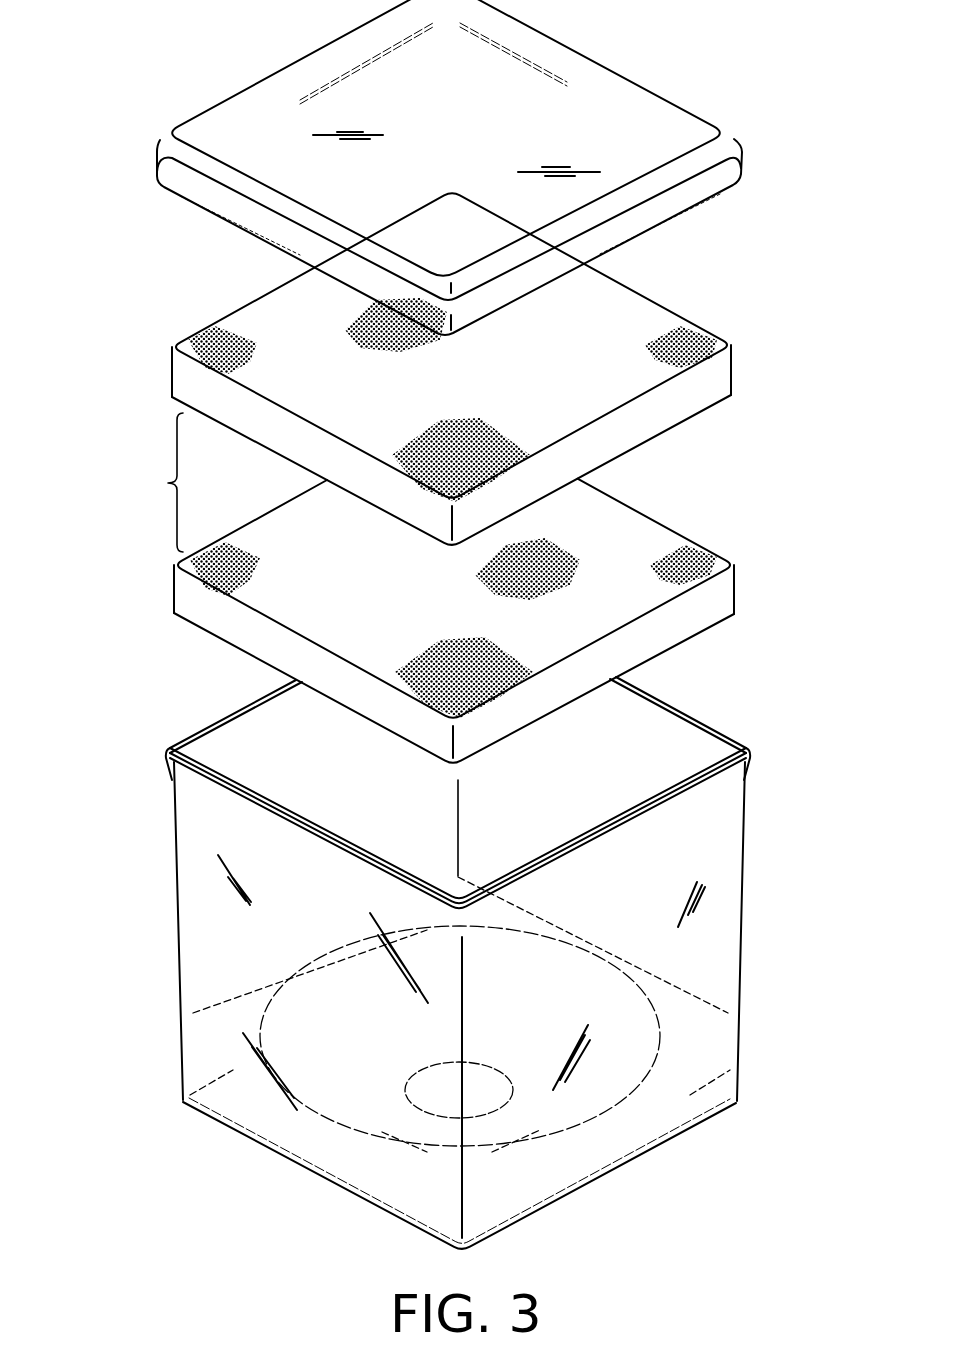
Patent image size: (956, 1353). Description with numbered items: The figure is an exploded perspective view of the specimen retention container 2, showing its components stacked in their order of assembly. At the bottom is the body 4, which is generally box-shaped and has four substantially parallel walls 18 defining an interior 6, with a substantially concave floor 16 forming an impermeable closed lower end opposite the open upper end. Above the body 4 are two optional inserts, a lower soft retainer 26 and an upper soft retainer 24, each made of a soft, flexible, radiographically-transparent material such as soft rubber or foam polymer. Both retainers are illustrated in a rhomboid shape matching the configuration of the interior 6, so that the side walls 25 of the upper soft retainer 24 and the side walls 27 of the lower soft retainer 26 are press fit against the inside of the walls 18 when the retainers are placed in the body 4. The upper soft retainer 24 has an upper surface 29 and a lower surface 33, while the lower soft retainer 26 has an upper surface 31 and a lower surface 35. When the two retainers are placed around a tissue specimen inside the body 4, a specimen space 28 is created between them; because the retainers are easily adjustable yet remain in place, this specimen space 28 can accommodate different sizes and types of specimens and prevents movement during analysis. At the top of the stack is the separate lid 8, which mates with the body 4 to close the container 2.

The specimen retention container 2 is at (150, 66).
The body 4 is at (207, 972).
The interior 6 is at (679, 827).
The lid 8 is at (596, 76).
The concave floor 16 is at (631, 1046).
The walls 18 is at (176, 880).
The upper soft retainer 24 is at (697, 345).
The side walls of upper retainer 25 is at (168, 370).
The lower soft retainer 26 is at (737, 585).
The side walls of lower retainer 27 is at (172, 590).
The specimen space 28 is at (159, 482).
The upper surface of upper retainer 29 is at (232, 340).
The upper surface of lower retainer 31 is at (699, 564).
The lower surface of upper retainer 33 is at (170, 400).
The lower surface of lower retainer 35 is at (185, 618).